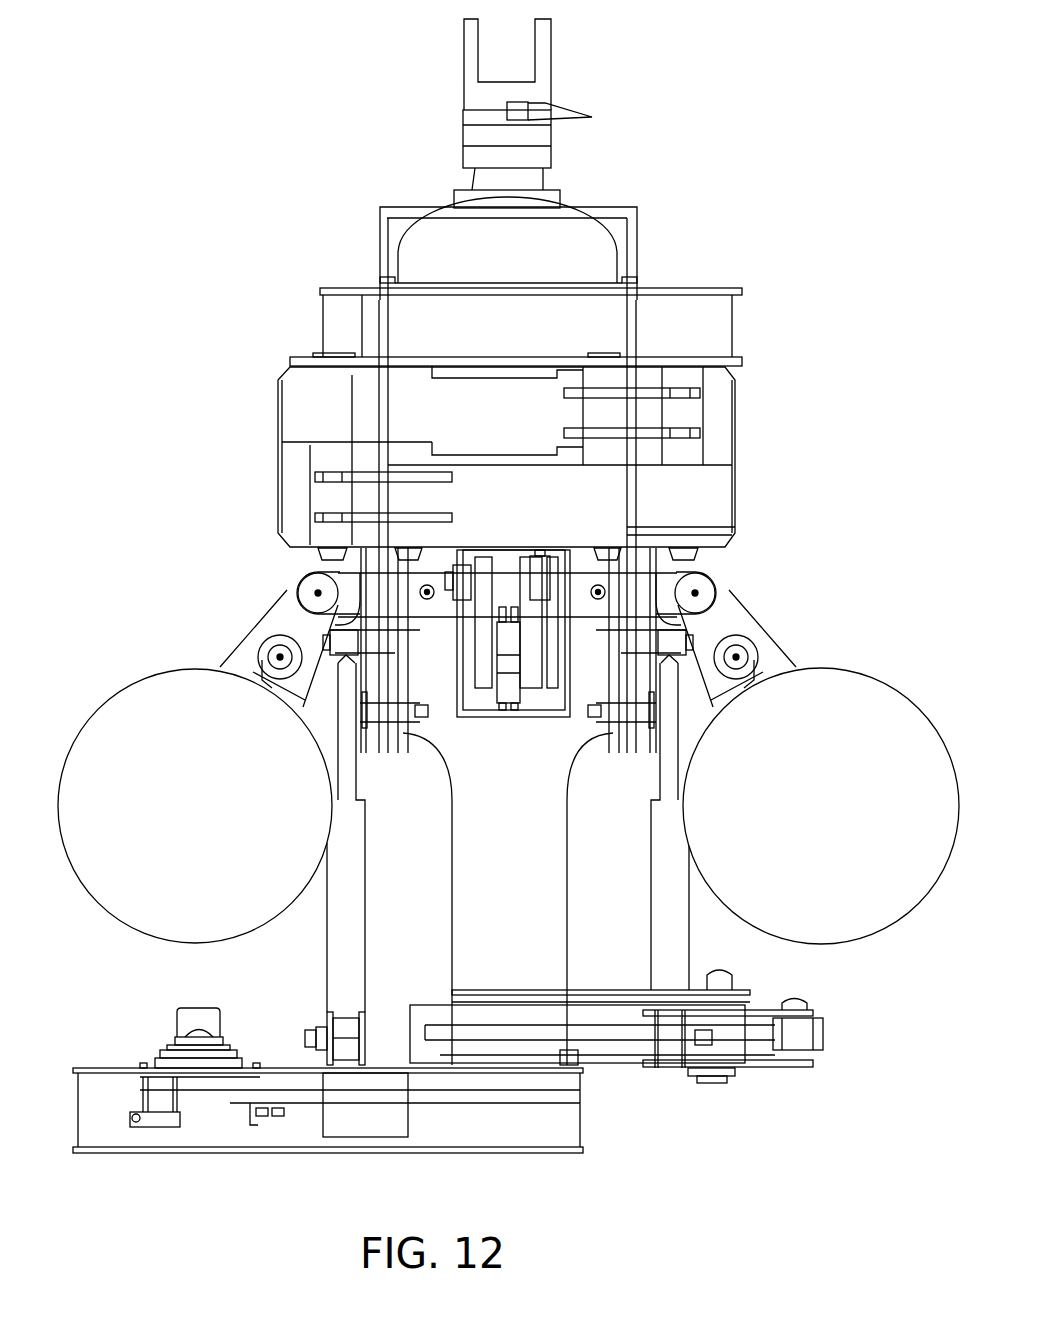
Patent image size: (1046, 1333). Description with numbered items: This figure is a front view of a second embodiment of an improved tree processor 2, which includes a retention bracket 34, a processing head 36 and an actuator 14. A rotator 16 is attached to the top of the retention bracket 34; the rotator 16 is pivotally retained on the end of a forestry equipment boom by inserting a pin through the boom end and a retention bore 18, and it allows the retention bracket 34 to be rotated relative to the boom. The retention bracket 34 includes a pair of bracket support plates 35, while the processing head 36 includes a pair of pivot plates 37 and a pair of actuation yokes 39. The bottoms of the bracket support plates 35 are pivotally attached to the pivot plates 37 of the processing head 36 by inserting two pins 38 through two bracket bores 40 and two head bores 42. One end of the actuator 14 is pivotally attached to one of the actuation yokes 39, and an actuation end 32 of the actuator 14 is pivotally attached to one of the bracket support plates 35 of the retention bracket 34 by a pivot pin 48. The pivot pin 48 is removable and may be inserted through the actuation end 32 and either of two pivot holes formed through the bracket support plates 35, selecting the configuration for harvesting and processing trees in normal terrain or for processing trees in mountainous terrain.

The improved tree processor 2 is at (770, 317).
The actuator 14 is at (365, 860).
The rotator 16 is at (552, 142).
The retention bore 18 is at (551, 47).
The actuation end 32 is at (707, 606).
The retention bracket 34 is at (637, 212).
The bracket support plates 35 is at (379, 243).
The processing head 36 is at (278, 476).
The pivot plates 37 is at (620, 742).
The pins 38 is at (410, 705).
The actuation yokes 39 is at (368, 1018).
The bracket bores 40 is at (383, 735).
The head bores 42 is at (393, 722).
The pivot pin 48 is at (722, 596).